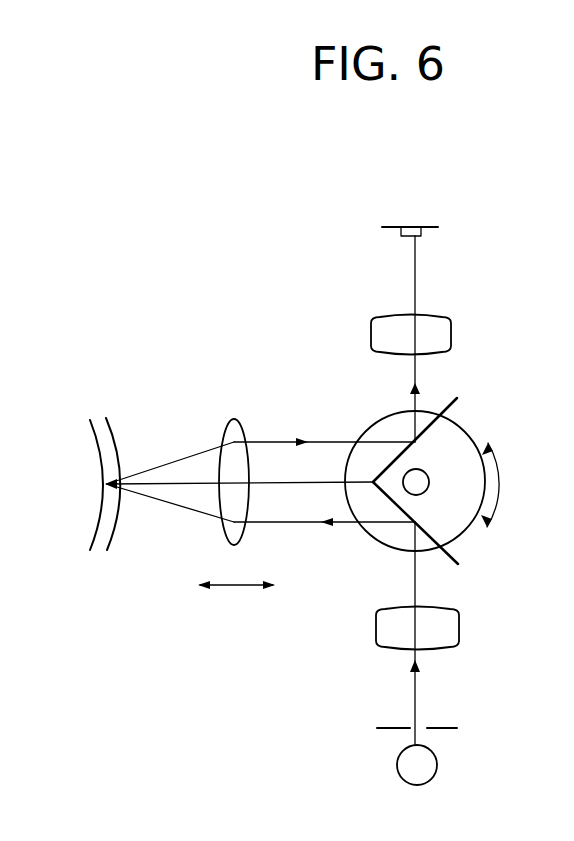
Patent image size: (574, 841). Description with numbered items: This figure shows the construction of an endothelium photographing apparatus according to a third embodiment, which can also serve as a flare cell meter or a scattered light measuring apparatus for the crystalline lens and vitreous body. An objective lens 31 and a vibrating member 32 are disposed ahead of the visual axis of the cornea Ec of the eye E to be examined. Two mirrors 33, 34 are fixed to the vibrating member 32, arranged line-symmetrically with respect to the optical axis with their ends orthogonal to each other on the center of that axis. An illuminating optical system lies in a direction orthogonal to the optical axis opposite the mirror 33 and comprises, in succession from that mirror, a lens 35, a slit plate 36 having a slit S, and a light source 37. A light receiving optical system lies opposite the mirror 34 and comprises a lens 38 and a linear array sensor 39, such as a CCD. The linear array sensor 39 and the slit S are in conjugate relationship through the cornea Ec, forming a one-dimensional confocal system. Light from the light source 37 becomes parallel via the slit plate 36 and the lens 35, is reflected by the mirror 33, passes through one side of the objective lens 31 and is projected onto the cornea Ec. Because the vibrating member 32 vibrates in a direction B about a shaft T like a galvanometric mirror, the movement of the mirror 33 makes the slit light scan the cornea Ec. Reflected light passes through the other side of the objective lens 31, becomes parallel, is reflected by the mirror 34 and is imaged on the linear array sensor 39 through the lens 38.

The objective lens 31 is at (235, 430).
The vibrating member 32 is at (390, 415).
The mirror 33 is at (455, 553).
The mirror 34 is at (453, 405).
The lens 35 is at (458, 622).
The slit plate 36 is at (453, 733).
The light source 37 is at (435, 775).
The lens 38 is at (450, 334).
The linear array sensor 39 is at (417, 238).
The eye to be examined E is at (93, 470).
The cornea Ec is at (118, 437).
The shaft T is at (424, 471).
The direction of vibration B is at (504, 485).
The slit S is at (422, 727).